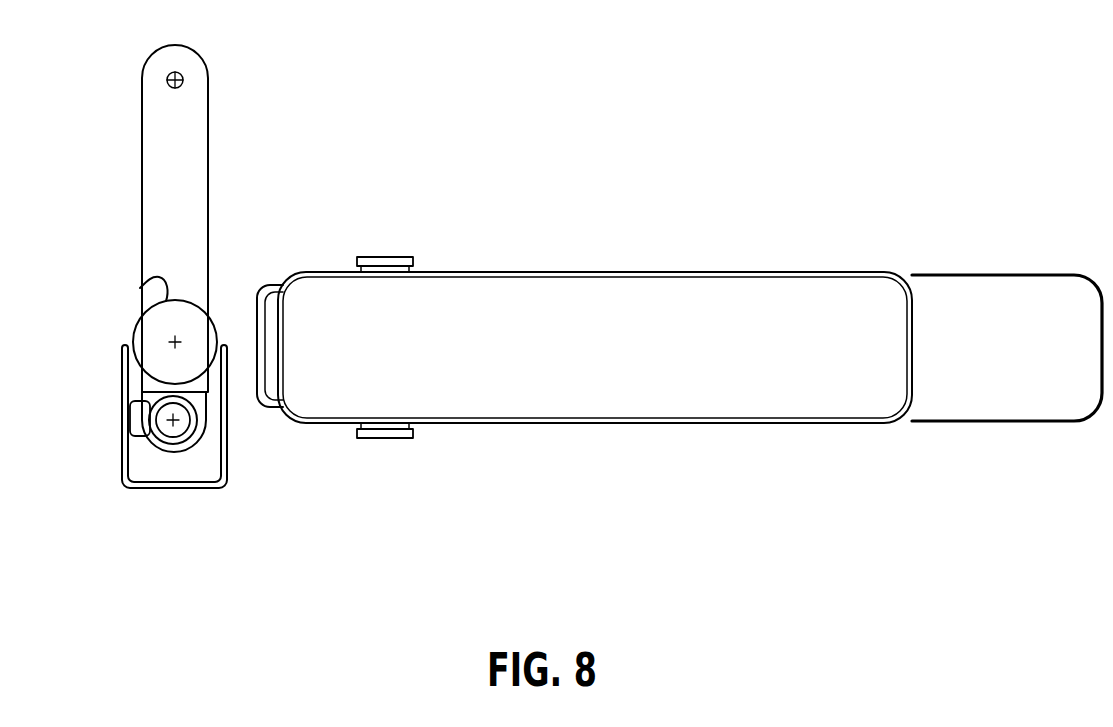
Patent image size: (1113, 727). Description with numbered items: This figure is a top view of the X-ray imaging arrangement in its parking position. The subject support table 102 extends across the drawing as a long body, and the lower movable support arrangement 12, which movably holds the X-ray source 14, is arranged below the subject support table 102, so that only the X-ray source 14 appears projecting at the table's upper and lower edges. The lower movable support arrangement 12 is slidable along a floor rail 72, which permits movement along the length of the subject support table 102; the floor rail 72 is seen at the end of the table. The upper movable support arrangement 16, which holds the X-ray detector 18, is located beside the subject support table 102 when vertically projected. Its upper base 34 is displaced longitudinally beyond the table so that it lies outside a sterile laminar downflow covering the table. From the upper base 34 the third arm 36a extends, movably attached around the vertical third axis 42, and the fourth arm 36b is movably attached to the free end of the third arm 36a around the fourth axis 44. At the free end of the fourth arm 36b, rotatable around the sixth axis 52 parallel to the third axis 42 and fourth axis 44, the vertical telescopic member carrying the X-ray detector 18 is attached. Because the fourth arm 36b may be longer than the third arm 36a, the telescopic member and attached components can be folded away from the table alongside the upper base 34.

The lower movable support arrangement 12 is at (438, 444).
The X-ray source 14 is at (386, 441).
The upper movable support arrangement 16 is at (181, 528).
The X-ray detector 18 is at (225, 470).
The upper base 34 is at (140, 288).
The third arm 36a is at (208, 145).
The fourth arm 36b is at (210, 383).
The third axis 42 is at (172, 340).
The fourth axis 44 is at (183, 78).
The sixth axis 52 is at (178, 425).
The floor rail 72 is at (280, 282).
The subject support table 102 is at (497, 276).